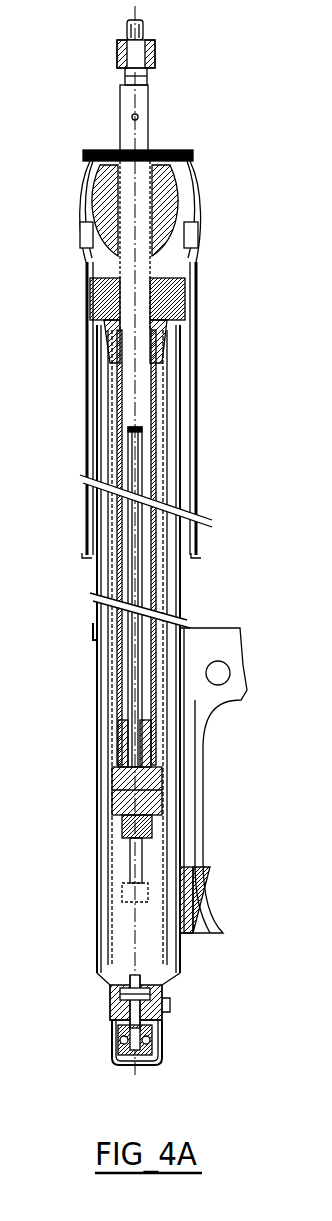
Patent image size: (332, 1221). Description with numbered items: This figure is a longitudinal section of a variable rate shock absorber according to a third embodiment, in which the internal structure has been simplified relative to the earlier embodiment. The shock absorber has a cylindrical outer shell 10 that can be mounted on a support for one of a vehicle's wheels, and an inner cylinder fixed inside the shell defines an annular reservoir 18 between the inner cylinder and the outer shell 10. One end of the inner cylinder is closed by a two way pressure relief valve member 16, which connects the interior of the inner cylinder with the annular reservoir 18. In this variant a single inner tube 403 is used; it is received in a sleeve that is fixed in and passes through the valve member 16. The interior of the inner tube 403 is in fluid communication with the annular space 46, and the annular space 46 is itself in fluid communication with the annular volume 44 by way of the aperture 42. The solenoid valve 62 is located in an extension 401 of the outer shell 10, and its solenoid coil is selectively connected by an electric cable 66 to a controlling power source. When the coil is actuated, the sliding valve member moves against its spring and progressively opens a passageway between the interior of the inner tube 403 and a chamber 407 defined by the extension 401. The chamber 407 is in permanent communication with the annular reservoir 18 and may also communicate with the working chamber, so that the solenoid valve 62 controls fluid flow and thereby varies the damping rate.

The outer shell 10 is at (92, 620).
The pressure relief valve member 16 is at (165, 983).
The annular reservoir 18 is at (172, 873).
The aperture 42 is at (120, 677).
The annular volume 44 is at (115, 655).
The annular space 46 is at (130, 572).
The solenoid valve 62 is at (112, 1028).
The electric cable 66 is at (177, 1005).
The extension 401 is at (163, 1027).
The inner tube 403 is at (147, 580).
The chamber 407 is at (150, 993).